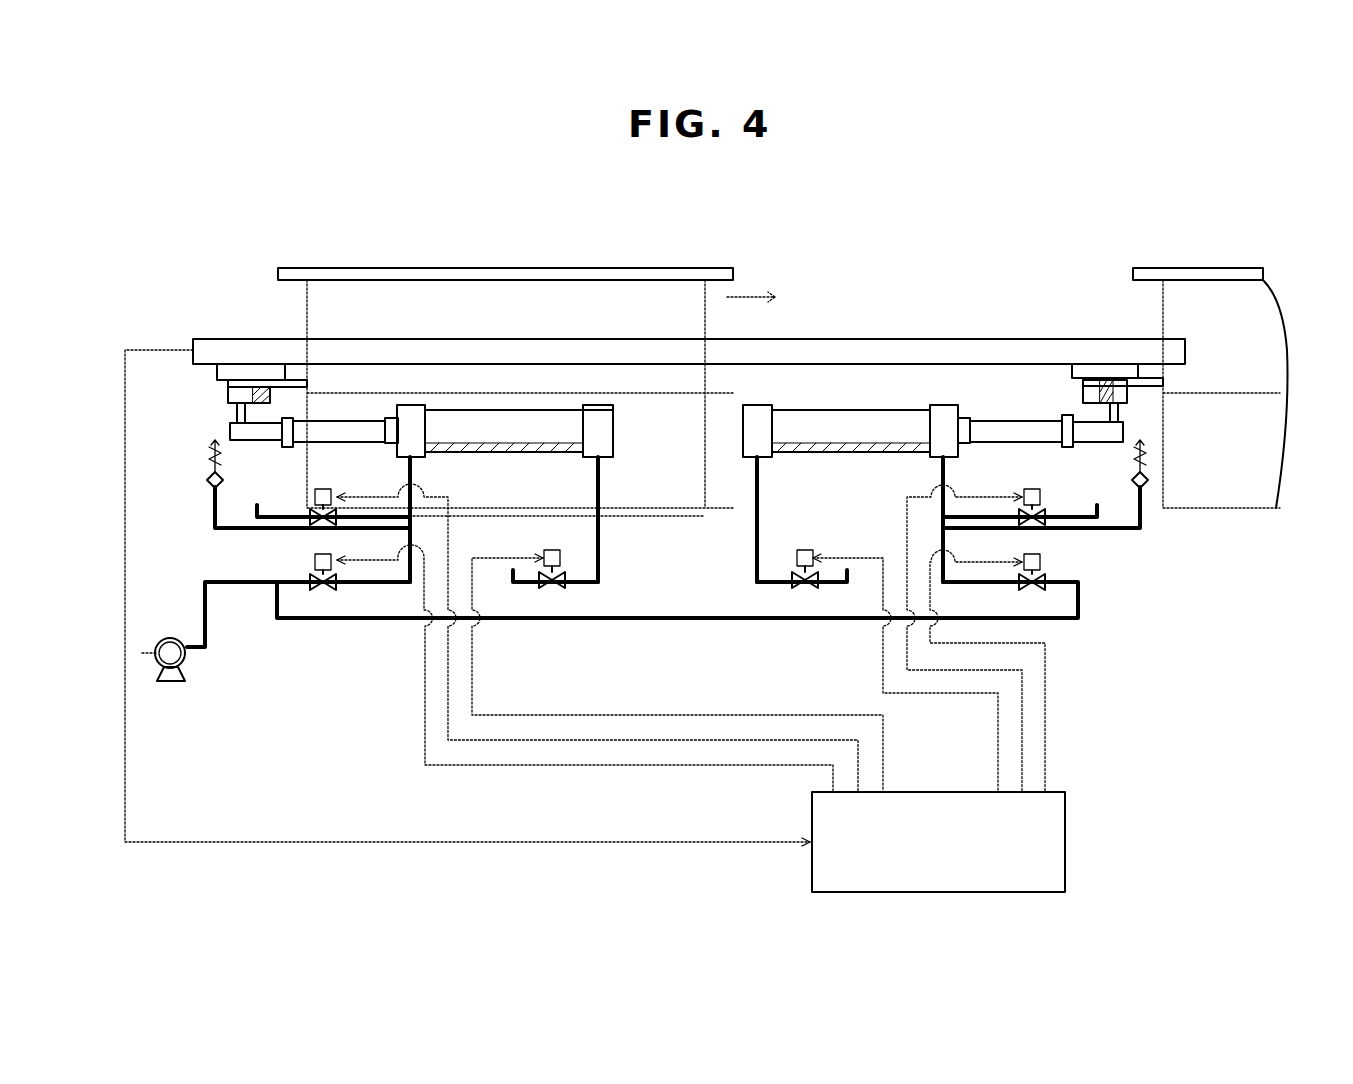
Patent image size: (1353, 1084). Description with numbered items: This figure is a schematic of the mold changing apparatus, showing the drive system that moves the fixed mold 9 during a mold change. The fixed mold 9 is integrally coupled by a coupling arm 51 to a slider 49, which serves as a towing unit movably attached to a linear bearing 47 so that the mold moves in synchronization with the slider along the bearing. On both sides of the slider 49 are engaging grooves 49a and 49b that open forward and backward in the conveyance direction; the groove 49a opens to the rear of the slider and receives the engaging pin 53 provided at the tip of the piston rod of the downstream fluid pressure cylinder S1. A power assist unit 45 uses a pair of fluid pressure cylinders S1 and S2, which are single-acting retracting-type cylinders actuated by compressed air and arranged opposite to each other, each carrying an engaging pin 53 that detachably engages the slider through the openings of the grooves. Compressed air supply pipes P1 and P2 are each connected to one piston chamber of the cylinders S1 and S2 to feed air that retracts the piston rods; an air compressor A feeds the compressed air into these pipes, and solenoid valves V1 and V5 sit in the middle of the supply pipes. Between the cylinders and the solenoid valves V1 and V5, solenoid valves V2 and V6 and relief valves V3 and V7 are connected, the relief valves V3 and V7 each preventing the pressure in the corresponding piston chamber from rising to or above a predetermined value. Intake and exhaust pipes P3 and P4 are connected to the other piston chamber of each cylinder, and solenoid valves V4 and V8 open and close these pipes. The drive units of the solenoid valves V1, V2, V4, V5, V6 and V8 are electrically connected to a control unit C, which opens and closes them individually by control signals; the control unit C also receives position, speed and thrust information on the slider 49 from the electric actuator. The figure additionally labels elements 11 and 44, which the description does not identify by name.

The fixed mold 9 is at (733, 268).
The housing frame 11 is at (663, 413).
The linear bearing 47 is at (218, 340).
The slider 49 is at (237, 367).
The engaging groove 49a is at (228, 395).
The engaging groove 49b is at (267, 375).
The coupling arm 51 is at (290, 367).
The engaging pin 53 is at (237, 412).
The first cylinder 44 is at (510, 393).
The power assist unit 45 is at (848, 398).
The fluid pressure cylinder S1 is at (603, 433).
The fluid pressure cylinder S2 is at (810, 410).
The compressed air supply pipe P1 is at (413, 480).
The compressed air supply pipe P2 is at (943, 470).
The intake and exhaust pipe P3 is at (597, 485).
The intake and exhaust pipe P4 is at (758, 483).
The solenoid valve V1 is at (330, 590).
The solenoid valve V2 is at (257, 518).
The relief valve V3 is at (207, 483).
The solenoid valve V4 is at (560, 576).
The solenoid valve V5 is at (1040, 585).
The solenoid valve V6 is at (1046, 512).
The relief valve V7 is at (1151, 485).
The solenoid valve V8 is at (750, 577).
The air compressor A is at (178, 682).
The control unit C is at (1066, 822).